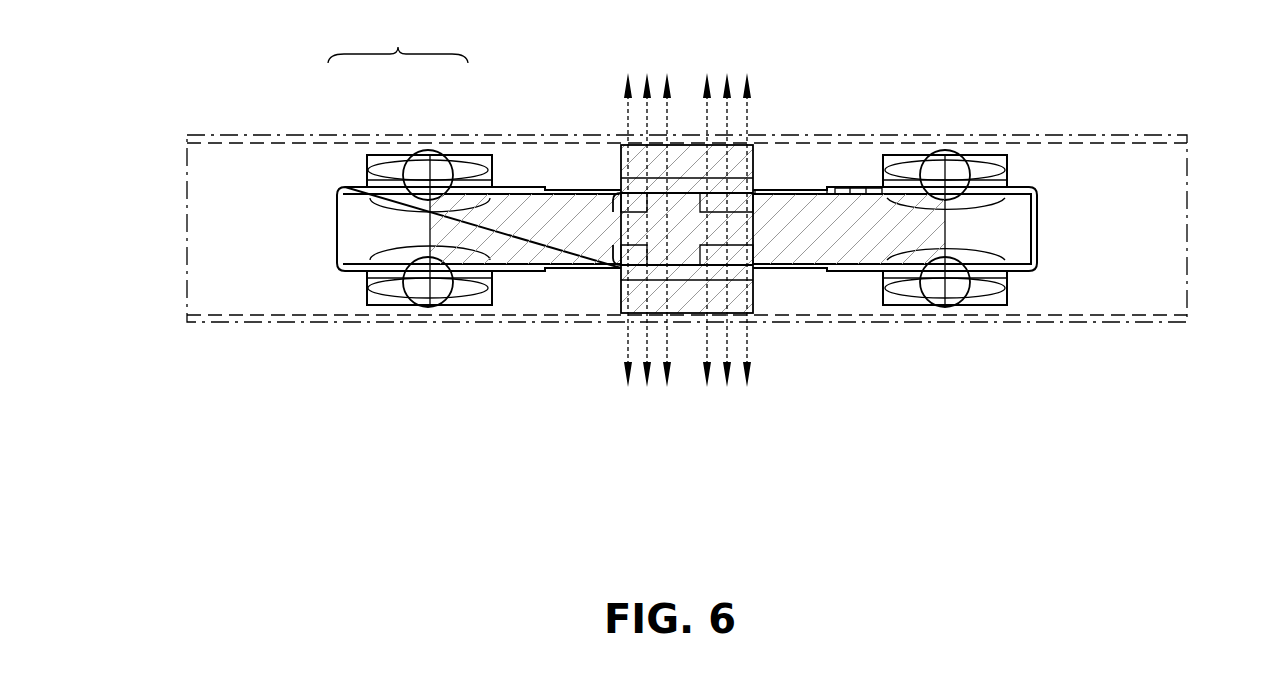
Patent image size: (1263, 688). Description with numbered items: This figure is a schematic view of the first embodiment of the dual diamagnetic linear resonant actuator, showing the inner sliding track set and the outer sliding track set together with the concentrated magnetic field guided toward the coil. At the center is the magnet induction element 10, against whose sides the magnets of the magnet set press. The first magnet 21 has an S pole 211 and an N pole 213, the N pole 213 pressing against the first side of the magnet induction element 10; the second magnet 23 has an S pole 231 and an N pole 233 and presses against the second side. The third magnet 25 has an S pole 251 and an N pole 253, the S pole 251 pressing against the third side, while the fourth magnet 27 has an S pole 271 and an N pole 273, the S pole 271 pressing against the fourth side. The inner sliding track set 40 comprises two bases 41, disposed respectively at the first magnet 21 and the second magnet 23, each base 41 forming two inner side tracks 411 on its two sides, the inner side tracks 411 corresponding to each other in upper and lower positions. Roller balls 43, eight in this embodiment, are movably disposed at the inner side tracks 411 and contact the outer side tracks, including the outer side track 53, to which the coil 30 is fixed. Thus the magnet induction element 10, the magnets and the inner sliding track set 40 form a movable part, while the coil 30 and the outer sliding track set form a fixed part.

The magnet induction element 10 is at (718, 228).
The first magnet 21 is at (530, 255).
The S pole 211 is at (415, 228).
The N pole 213 is at (612, 262).
The second magnet 23 is at (832, 230).
The S pole 231 is at (868, 192).
The N pole 233 is at (790, 192).
The third magnet 25 is at (687, 106).
The S pole 251 is at (700, 180).
The N pole 253 is at (700, 212).
The fourth magnet 27 is at (687, 348).
The S pole 271 is at (707, 245).
The N pole 273 is at (673, 245).
The coil 30 is at (615, 147).
The inner sliding track set 40 is at (695, 204).
The base 41 is at (338, 228).
The inner side track 411 is at (474, 162).
The roller ball 43 is at (428, 152).
The outer side track 53 is at (288, 135).